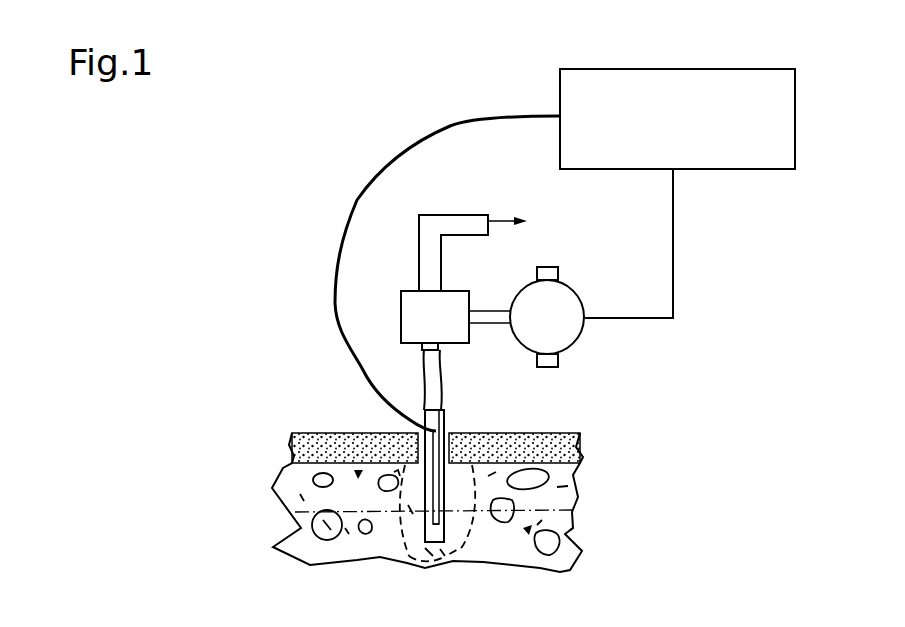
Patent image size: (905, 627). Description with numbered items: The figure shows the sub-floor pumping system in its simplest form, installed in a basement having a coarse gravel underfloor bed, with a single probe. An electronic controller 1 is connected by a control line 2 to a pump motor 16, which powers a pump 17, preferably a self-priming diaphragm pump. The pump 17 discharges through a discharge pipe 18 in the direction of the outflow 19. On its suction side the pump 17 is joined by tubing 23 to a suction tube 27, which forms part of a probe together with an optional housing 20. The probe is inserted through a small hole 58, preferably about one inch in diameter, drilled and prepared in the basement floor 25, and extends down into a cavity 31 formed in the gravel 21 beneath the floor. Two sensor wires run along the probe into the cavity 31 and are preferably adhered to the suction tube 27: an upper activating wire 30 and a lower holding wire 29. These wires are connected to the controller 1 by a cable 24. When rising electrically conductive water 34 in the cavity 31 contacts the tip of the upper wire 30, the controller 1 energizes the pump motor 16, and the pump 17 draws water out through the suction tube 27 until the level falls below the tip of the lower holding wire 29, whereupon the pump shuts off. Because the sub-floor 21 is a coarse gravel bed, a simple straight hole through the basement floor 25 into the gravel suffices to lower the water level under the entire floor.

The electronic controller 1 is at (559, 103).
The motor control line 2 is at (672, 258).
The pump motor 16 is at (517, 292).
The pump 17 is at (415, 290).
The discharge pipe 18 is at (425, 220).
The discharge flow 19 is at (520, 222).
The housing 20 is at (425, 412).
The gravel 21 is at (291, 472).
The tubing 23 is at (432, 395).
The sensor cable 24 is at (338, 276).
The basement floor 25 is at (320, 434).
The suction tube 27 is at (446, 430).
The lower holding wire 29 is at (438, 488).
The upper activating wire 30 is at (446, 487).
The cavity 31 is at (433, 552).
The water 34 is at (408, 508).
The hole 58 is at (455, 433).